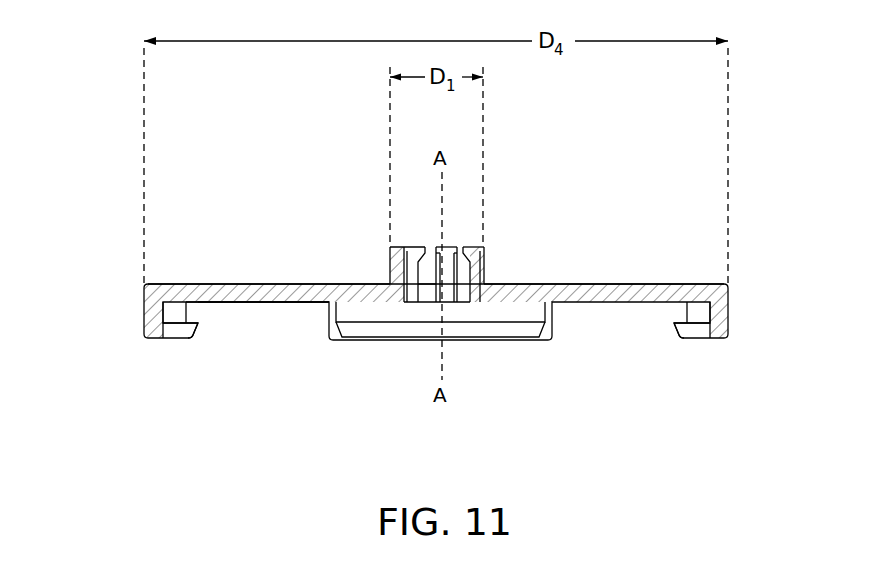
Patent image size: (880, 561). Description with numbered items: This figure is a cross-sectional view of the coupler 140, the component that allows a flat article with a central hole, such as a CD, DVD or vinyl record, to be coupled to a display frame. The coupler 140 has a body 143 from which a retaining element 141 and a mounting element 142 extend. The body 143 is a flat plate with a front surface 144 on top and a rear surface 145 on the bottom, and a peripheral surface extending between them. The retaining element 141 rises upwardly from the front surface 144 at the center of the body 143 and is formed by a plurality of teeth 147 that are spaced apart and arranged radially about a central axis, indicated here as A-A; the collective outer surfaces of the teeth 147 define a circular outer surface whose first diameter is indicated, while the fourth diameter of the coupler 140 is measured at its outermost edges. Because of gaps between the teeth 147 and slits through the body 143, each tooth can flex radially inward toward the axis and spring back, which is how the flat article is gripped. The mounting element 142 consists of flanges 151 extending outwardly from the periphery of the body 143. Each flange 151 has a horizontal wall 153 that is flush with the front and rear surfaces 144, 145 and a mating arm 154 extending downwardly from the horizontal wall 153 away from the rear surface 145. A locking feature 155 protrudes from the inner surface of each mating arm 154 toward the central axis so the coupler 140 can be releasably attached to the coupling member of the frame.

The coupler 140 is at (116, 186).
The retaining element 141 is at (376, 258).
The mounting element 142 is at (183, 352).
The body 143 is at (200, 292).
The front surface 144 is at (228, 292).
The rear surface 145 is at (265, 303).
The teeth 147 is at (398, 262).
The flanges 151 is at (712, 276).
The horizontal wall 153 is at (283, 290).
The mating arm 154 is at (153, 315).
The locking feature 155 is at (187, 330).